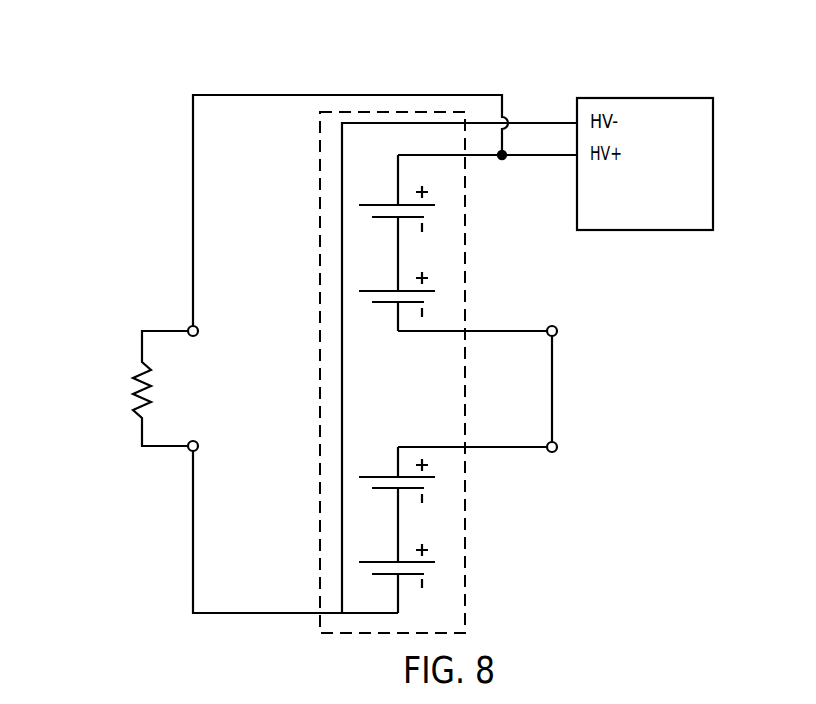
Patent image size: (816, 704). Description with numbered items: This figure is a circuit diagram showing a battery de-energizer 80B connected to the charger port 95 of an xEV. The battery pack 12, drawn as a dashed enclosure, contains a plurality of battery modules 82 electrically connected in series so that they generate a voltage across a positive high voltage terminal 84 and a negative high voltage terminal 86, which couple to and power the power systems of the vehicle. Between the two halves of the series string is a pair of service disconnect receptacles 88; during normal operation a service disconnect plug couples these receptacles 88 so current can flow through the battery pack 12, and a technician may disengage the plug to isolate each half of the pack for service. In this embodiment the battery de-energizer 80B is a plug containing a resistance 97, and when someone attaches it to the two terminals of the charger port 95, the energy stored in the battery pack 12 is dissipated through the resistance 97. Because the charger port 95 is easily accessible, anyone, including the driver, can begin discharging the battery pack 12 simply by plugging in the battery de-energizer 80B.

The battery pack 12 is at (319, 400).
The battery modules 82 is at (384, 204).
The positive high voltage terminal 84 is at (576, 152).
The negative high voltage terminal 86 is at (576, 120).
The service disconnect receptacles 88 is at (547, 336).
The charger port 95 is at (197, 336).
The resistance 97 is at (135, 380).
The battery de-energizer 80B is at (145, 315).